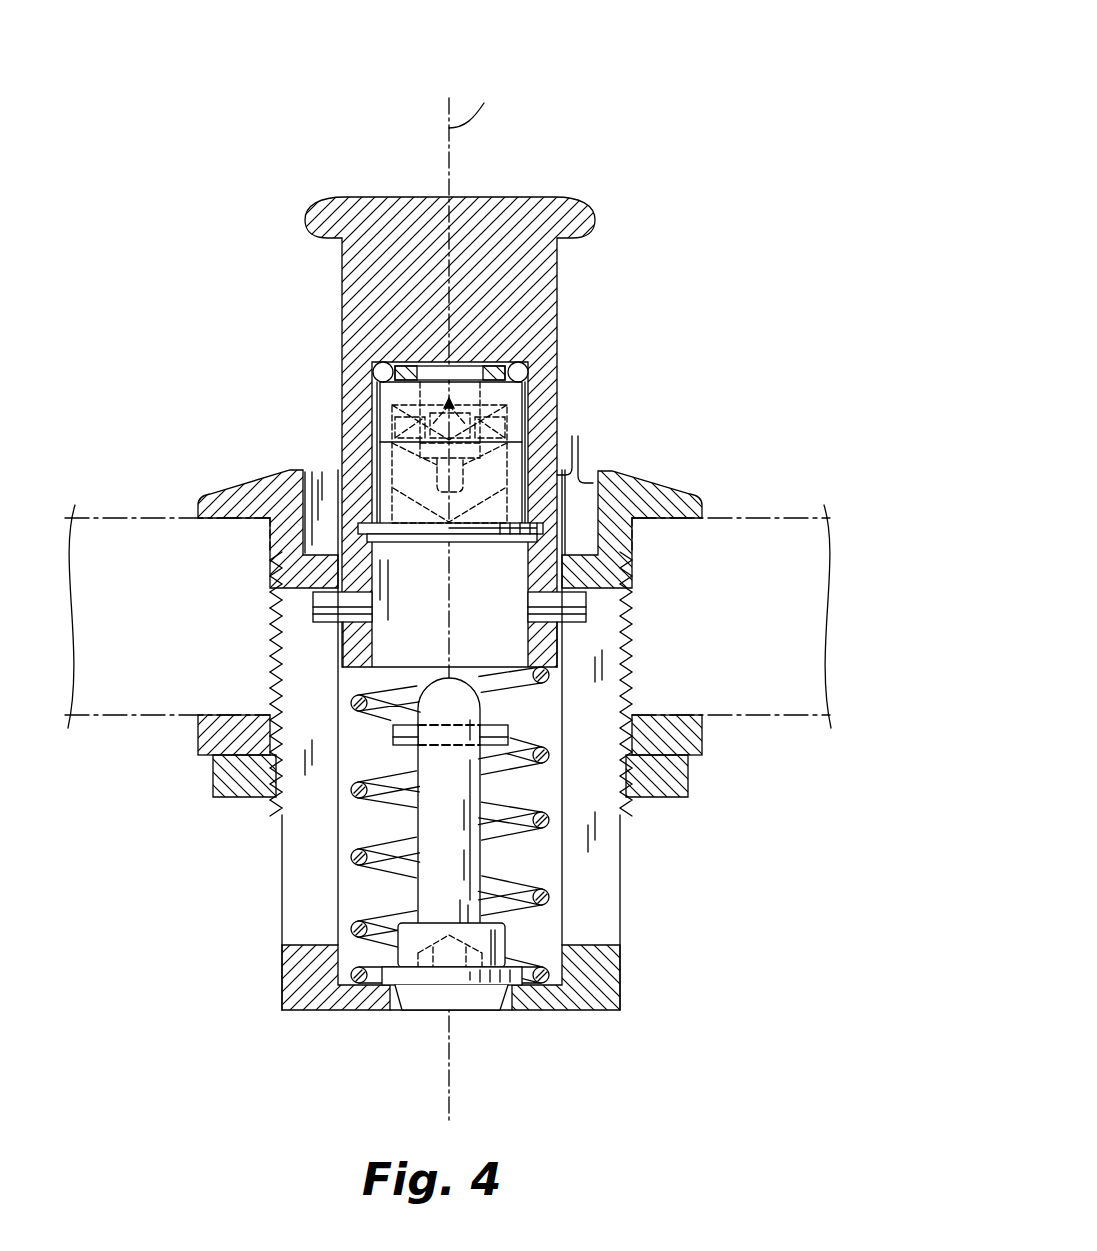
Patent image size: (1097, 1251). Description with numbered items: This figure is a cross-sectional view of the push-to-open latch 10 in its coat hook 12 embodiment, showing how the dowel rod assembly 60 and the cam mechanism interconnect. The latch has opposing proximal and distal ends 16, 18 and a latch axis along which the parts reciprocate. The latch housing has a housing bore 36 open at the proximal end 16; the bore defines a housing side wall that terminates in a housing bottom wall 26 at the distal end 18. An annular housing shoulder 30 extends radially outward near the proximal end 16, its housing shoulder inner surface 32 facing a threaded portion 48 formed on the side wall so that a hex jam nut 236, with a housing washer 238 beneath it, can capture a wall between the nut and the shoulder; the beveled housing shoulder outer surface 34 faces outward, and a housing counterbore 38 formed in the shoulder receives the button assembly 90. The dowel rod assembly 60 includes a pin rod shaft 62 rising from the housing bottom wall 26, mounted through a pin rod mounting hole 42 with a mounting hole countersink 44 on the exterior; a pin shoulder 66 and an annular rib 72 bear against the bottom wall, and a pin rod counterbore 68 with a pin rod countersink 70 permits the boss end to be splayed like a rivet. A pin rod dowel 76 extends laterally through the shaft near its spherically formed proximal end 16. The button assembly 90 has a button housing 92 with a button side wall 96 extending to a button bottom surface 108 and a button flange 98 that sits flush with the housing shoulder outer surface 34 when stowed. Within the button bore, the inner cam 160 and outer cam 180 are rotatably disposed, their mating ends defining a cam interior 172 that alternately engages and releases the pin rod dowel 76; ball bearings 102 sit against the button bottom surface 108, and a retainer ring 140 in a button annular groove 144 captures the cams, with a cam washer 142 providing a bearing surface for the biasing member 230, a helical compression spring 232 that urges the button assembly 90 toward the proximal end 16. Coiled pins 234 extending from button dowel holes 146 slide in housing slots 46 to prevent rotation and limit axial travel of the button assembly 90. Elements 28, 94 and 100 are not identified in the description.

The push-to-open latch 10 is at (674, 72).
The coat hook 12 is at (450, 563).
The proximal end 16 is at (575, 233).
The distal end 18 is at (614, 1009).
The housing bottom wall 26 is at (598, 1005).
The mounting flange 28 is at (637, 486).
The housing shoulder 30 is at (700, 514).
The housing shoulder inner surface 32 is at (668, 528).
The housing shoulder outer surface 34 is at (672, 500).
The housing bore 36 is at (503, 950).
The housing counterbore 38 is at (598, 476).
The pin rod mounting hole 42 is at (390, 1012).
The mounting hole countersink 44 is at (512, 992).
The housing slots 46 is at (300, 877).
The threaded portion 48 is at (359, 798).
The dowel rod assembly 60 is at (425, 890).
The pin rod shaft 62 is at (472, 882).
The pin shoulder 66 is at (537, 988).
The pin rod counterbore 68 is at (440, 990).
The pin rod countersink 70 is at (420, 985).
The rib 72 is at (500, 986).
The pin rod dowel 76 is at (400, 745).
The button assembly 90 is at (372, 196).
The button housing 92 is at (343, 292).
The cap rim 94 is at (312, 228).
The button side wall 96 is at (558, 278).
The button flange 98 is at (565, 200).
The seal 100 is at (390, 366).
The ball bearings 102 is at (375, 370).
The button bottom surface 108 is at (495, 340).
The retainer ring 140 is at (493, 536).
The cam washer 142 is at (438, 545).
The button annular groove 144 is at (548, 531).
The button dowel holes 146 is at (345, 632).
The inner cam 160 is at (510, 394).
The cam interior 172 is at (578, 446).
The outer cam 180 is at (418, 482).
The biasing member 230 is at (298, 858).
The helical compression spring 232 is at (392, 707).
The coiled pins 234 is at (330, 606).
The hex jam nut 236 is at (690, 772).
The housing washer 238 is at (702, 736).